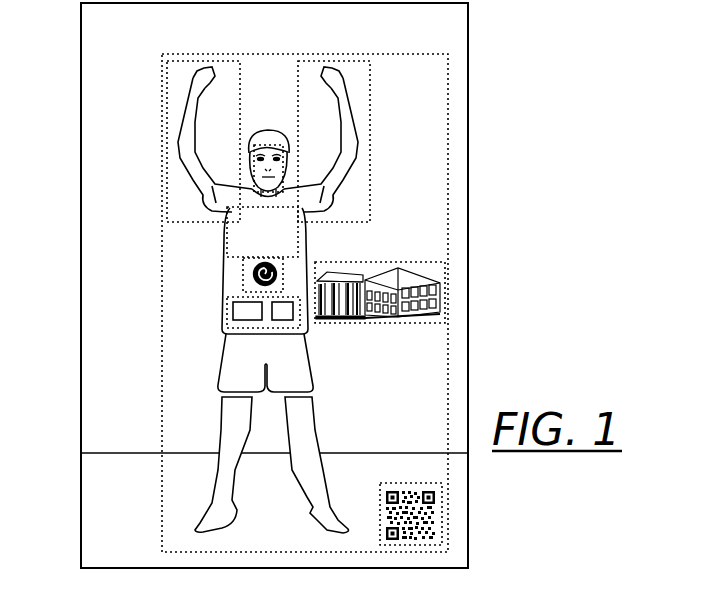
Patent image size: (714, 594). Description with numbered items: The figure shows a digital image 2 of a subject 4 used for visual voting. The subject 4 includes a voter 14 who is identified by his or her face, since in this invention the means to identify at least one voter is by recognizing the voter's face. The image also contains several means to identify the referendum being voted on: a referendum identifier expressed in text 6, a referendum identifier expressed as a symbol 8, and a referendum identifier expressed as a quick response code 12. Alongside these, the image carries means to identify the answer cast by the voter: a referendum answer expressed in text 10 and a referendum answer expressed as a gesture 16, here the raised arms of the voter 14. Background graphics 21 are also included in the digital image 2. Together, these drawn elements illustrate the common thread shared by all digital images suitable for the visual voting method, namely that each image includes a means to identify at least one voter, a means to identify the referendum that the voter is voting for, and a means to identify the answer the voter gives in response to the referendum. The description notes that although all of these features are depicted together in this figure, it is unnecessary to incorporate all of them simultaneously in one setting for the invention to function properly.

The digital image 2 is at (81, 55).
The subject of digital image 4 is at (162, 205).
The text 6 is at (225, 238).
The symbol 8 is at (240, 278).
The referendum answer in text 10 is at (227, 314).
The quick response (QR) Code 12 is at (442, 497).
The voter 14 is at (250, 176).
The referendum answer expressed as a gesture 16 is at (167, 102).
The background graphics 21 is at (417, 262).